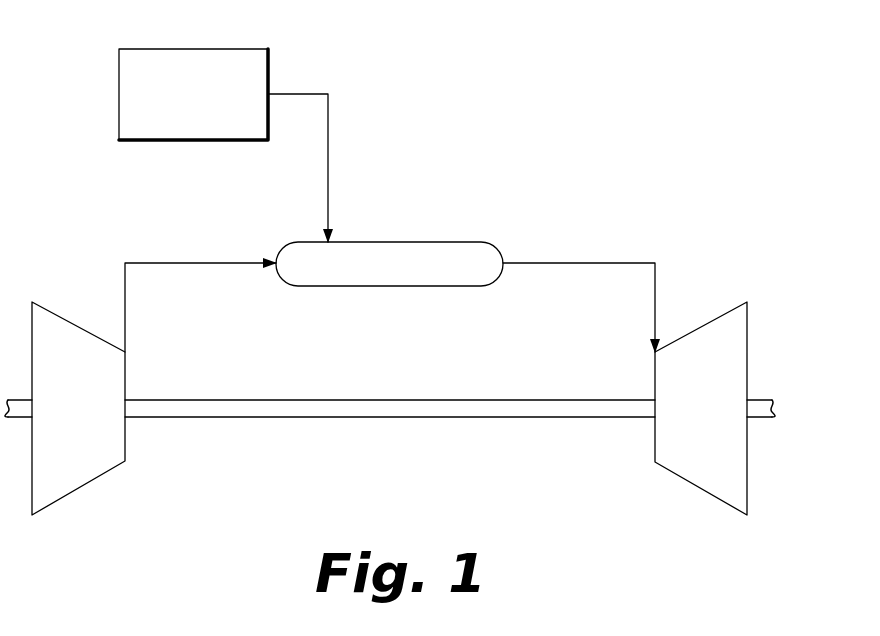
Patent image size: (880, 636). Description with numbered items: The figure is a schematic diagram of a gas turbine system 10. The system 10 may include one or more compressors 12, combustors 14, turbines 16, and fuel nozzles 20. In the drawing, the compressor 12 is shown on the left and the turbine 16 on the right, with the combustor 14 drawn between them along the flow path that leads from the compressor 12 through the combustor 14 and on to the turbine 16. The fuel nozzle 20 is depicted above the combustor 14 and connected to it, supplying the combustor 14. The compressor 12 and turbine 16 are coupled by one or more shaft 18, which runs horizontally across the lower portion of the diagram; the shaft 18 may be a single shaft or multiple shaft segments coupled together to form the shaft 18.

The gas turbine system 10 is at (640, 178).
The compressor 12 is at (80, 489).
The combustor 14 is at (392, 242).
The turbine 16 is at (747, 318).
The shaft 18 is at (390, 417).
The fuel nozzle 20 is at (268, 49).